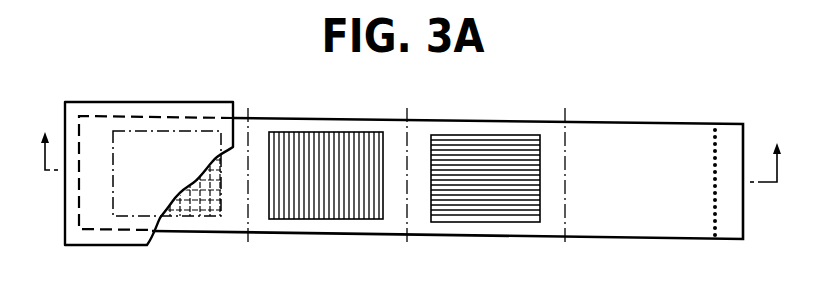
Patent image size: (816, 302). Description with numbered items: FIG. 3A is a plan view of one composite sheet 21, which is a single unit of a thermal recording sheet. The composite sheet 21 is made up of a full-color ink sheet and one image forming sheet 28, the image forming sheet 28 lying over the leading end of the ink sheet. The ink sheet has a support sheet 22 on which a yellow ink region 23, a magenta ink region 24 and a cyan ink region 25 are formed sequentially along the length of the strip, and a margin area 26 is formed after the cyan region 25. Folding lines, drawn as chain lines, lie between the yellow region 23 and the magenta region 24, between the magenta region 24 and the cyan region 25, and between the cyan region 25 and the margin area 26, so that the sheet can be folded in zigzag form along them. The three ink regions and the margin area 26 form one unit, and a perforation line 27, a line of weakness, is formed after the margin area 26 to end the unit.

The composite sheet 21 is at (590, 114).
The support sheet 22 is at (272, 118).
The yellow ink region 23 is at (190, 212).
The magenta ink region 24 is at (329, 208).
The cyan ink region 25 is at (487, 208).
The margin area 26 is at (640, 222).
The perforation line 27 is at (715, 213).
The image forming sheet 28 is at (147, 107).